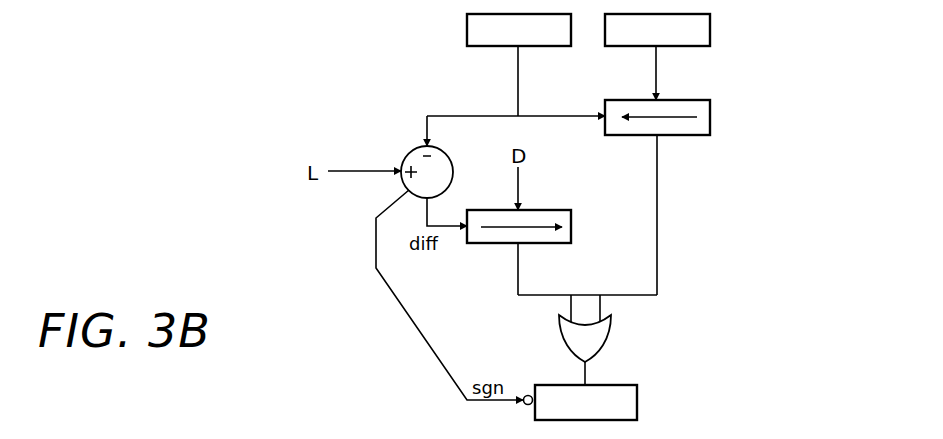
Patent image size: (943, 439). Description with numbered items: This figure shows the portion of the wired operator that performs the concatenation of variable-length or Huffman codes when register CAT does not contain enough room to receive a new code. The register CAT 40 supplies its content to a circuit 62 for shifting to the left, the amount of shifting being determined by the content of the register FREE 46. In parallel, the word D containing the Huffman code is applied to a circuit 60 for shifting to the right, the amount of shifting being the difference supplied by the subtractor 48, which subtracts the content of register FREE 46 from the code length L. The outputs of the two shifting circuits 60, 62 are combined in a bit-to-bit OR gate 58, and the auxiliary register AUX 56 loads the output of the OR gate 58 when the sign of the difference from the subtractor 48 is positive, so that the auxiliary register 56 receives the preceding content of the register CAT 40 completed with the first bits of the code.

The register CAT 40 is at (710, 25).
The register FREE 46 is at (467, 27).
The subtractor 48 is at (406, 151).
The auxiliary register AUX 56 is at (623, 403).
The bit-to-bit OR gate 58 is at (600, 338).
The circuit for shifting word D to the right 60 is at (565, 229).
The circuit for shifting to the left the content of register CAT 62 is at (710, 111).